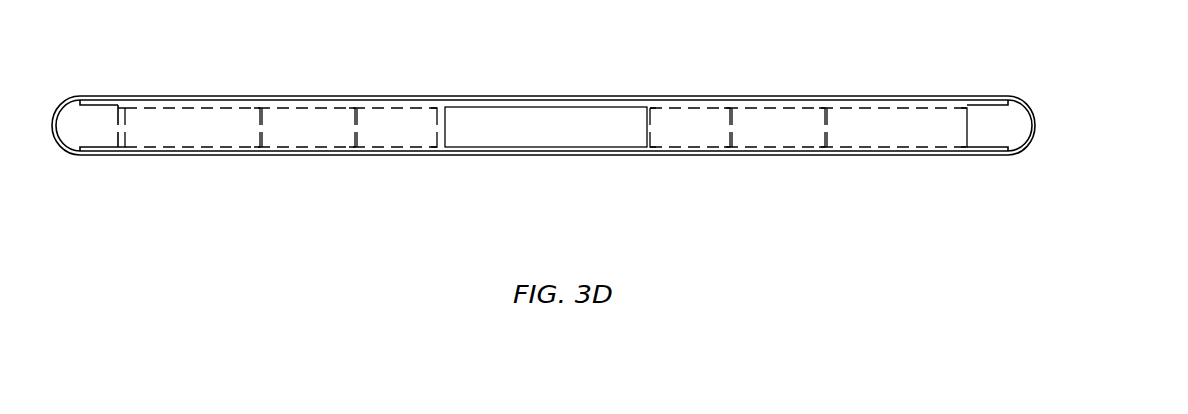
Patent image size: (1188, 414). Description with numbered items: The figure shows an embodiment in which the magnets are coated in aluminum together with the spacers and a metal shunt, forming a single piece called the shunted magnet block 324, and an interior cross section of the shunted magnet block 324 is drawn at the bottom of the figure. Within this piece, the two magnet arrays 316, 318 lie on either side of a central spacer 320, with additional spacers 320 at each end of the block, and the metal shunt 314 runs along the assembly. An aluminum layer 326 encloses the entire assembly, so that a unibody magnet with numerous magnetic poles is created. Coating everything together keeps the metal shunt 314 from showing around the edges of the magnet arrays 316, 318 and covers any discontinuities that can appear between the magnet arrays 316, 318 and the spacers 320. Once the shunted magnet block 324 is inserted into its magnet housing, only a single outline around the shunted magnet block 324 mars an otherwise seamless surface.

The metal shunt 314 is at (543, 101).
The magnet array 316 is at (123, 165).
The magnet array 318 is at (647, 165).
The spacer 320 is at (71, 134).
The shunted magnet block 324 is at (573, 83).
The aluminum layer 326 is at (497, 97).